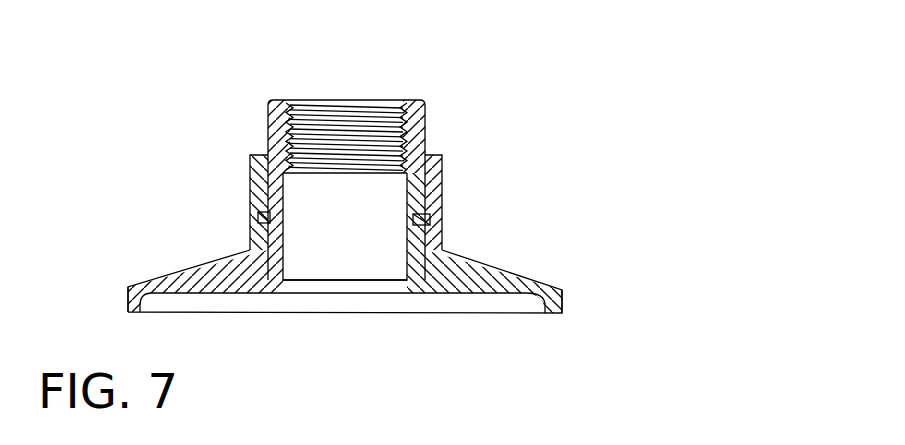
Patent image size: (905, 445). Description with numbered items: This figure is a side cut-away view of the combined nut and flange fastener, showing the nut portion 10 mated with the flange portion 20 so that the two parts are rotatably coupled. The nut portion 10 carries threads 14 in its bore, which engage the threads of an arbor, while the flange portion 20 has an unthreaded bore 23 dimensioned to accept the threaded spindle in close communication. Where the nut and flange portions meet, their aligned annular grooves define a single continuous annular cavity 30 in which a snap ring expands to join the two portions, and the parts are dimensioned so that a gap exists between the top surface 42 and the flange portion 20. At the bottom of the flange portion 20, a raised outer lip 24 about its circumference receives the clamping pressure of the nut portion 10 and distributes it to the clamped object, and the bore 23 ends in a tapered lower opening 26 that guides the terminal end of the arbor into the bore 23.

The nut portion 10 is at (461, 143).
The threads 14 is at (313, 110).
The flange portion 20 is at (166, 272).
The bore 23 is at (303, 249).
The raised outer lip 24 is at (140, 312).
The tapered lower opening 26 is at (410, 291).
The annular cavity 30 is at (257, 223).
The top surface 42 is at (440, 168).